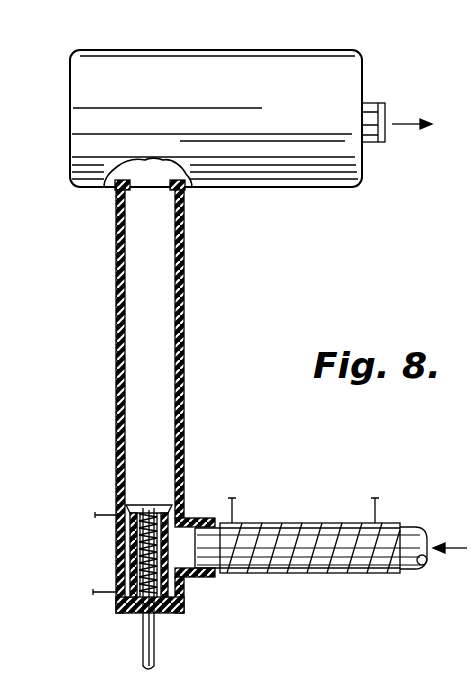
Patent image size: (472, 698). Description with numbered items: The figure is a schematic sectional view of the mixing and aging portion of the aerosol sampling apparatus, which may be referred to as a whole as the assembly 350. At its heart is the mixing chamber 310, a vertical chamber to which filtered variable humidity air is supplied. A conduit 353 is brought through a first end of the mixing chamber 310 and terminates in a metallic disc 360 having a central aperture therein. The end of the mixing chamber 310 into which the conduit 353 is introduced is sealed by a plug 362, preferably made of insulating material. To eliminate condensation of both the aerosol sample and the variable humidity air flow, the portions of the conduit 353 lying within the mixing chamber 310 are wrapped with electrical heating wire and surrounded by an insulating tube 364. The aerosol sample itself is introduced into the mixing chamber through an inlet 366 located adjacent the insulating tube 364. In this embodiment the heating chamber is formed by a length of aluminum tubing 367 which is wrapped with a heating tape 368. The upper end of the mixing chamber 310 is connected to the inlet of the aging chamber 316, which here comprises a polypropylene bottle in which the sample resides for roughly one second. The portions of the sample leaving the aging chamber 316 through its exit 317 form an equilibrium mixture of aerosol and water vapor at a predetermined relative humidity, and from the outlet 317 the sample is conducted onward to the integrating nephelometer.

The fluid dispensing assembly 350 is at (459, 11).
The aging chamber 316 is at (286, 58).
The exit 317 is at (372, 108).
The mixing chamber 310 is at (185, 325).
The metallic disc 360 is at (140, 505).
The insulating tube 364 is at (138, 549).
The inlet 366 is at (184, 545).
The aluminum tubing 367 is at (402, 526).
The heating tape 368 is at (348, 566).
The plug 362 is at (168, 614).
The conduit 353 is at (142, 645).